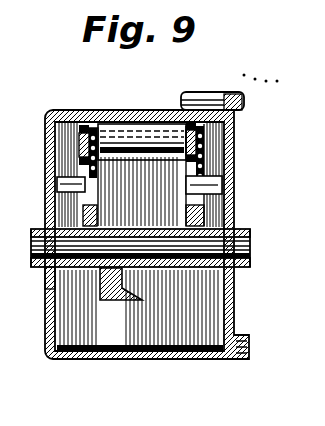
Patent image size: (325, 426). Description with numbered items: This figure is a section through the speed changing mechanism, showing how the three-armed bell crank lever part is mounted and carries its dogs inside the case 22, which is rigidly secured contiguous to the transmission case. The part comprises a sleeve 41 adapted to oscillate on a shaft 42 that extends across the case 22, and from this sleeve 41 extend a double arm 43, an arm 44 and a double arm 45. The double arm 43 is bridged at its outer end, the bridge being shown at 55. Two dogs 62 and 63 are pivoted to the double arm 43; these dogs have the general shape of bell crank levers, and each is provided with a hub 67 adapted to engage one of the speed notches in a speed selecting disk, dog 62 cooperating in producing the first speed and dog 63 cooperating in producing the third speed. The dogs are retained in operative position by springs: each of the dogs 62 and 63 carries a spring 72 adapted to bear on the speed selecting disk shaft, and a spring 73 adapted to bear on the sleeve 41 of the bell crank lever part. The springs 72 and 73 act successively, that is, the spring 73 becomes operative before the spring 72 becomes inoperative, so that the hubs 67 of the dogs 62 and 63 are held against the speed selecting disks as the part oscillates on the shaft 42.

The case 22 is at (50, 207).
The sleeve 41 is at (187, 282).
The shaft 42 is at (225, 250).
The double arm 43 is at (150, 197).
The arm 44 is at (203, 205).
The double arm 45 is at (120, 283).
The bridge 55 is at (138, 128).
The dog 62 is at (82, 123).
The dog 63 is at (190, 128).
The hub 67 is at (60, 180).
The spring 72 is at (75, 162).
The spring 73 is at (83, 219).